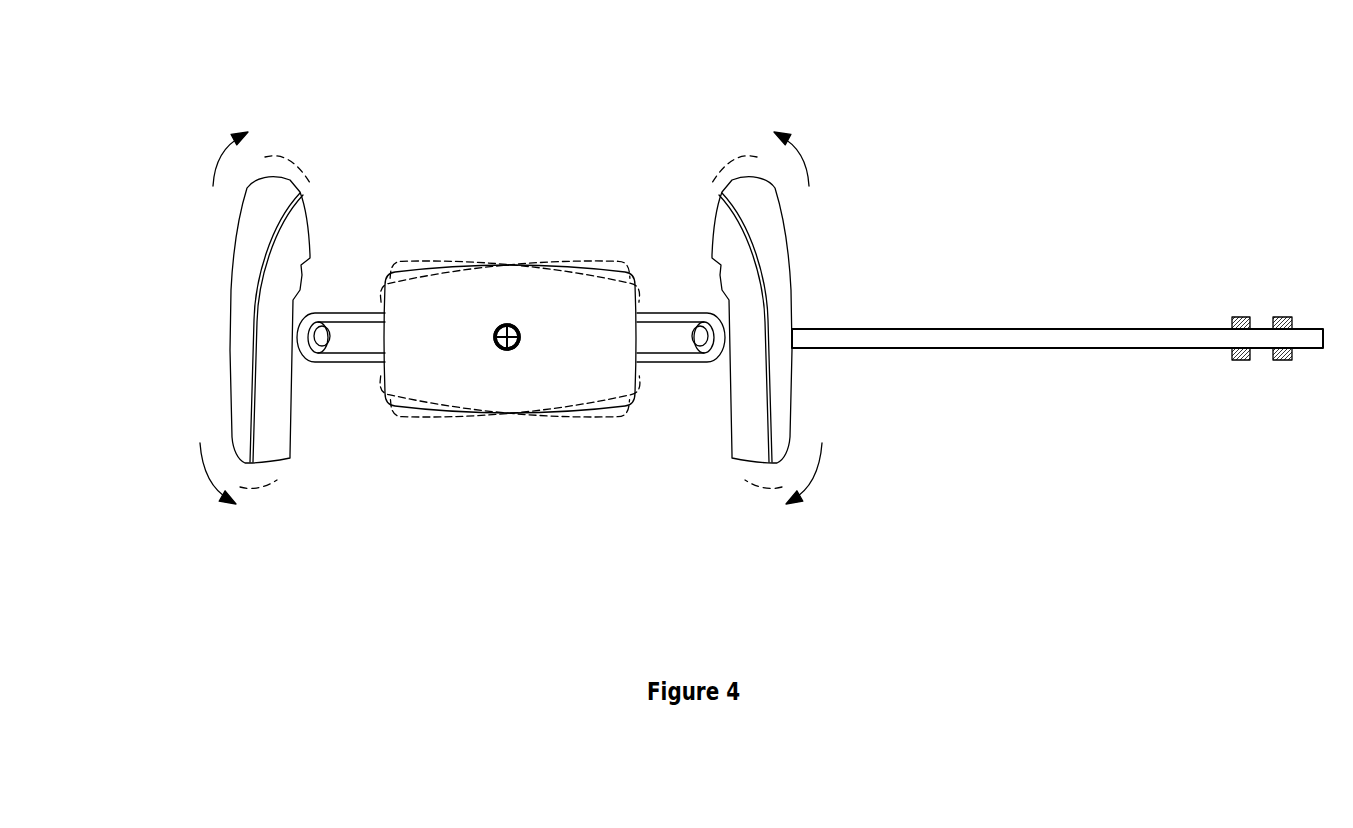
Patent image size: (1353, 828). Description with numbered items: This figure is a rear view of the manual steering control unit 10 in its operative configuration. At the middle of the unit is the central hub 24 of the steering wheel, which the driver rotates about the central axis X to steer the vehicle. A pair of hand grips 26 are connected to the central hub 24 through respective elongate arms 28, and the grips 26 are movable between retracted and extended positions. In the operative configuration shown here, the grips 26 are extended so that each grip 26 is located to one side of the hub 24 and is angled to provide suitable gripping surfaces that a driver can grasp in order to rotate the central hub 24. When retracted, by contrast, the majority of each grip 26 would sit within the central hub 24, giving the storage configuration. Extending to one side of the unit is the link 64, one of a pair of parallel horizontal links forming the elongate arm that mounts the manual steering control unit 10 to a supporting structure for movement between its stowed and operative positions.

The manual steering control unit 10 is at (950, 113).
The central hub 24 is at (513, 263).
The hand grips 26 is at (238, 278).
The elongate arms 28 is at (338, 312).
The link 64 is at (993, 338).
The central axis X is at (507, 353).